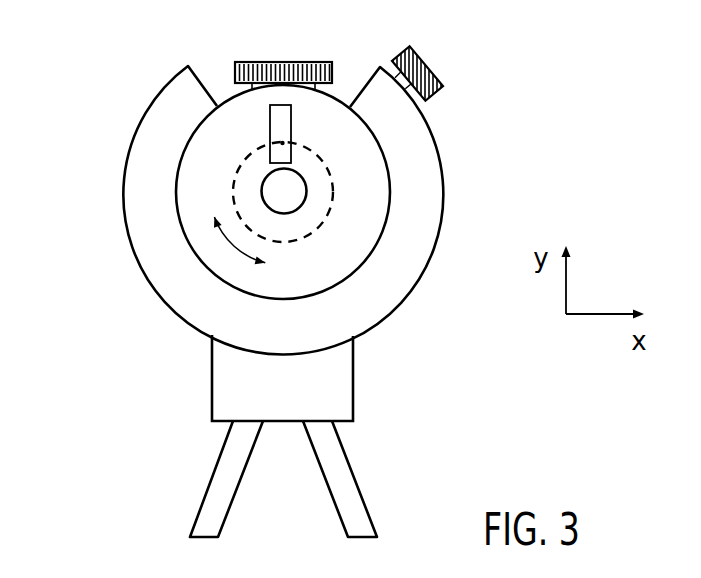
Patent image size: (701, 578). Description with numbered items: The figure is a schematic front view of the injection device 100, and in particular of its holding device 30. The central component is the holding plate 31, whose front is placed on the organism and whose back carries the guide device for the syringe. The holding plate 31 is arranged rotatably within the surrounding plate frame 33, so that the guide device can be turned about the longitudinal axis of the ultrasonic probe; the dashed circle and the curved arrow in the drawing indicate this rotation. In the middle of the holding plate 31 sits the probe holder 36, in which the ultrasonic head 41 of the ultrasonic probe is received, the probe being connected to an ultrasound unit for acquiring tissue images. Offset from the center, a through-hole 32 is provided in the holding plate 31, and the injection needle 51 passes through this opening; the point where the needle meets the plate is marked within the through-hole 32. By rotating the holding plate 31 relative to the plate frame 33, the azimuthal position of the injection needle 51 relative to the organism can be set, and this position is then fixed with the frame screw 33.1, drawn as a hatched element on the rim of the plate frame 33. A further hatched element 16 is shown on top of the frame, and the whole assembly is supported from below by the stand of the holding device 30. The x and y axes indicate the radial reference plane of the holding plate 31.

The injection device 100 is at (55, 82).
The hatched component on housing top 16 is at (234, 62).
The plate frame 33 is at (158, 170).
The frame screw 33.1 is at (425, 79).
The holding device 30 is at (197, 168).
The holding plate 31 is at (345, 167).
The through-hole 32 is at (284, 132).
The probe holder 36 is at (261, 188).
The ultrasonic head 41 is at (297, 205).
The injection needle 51 is at (283, 143).